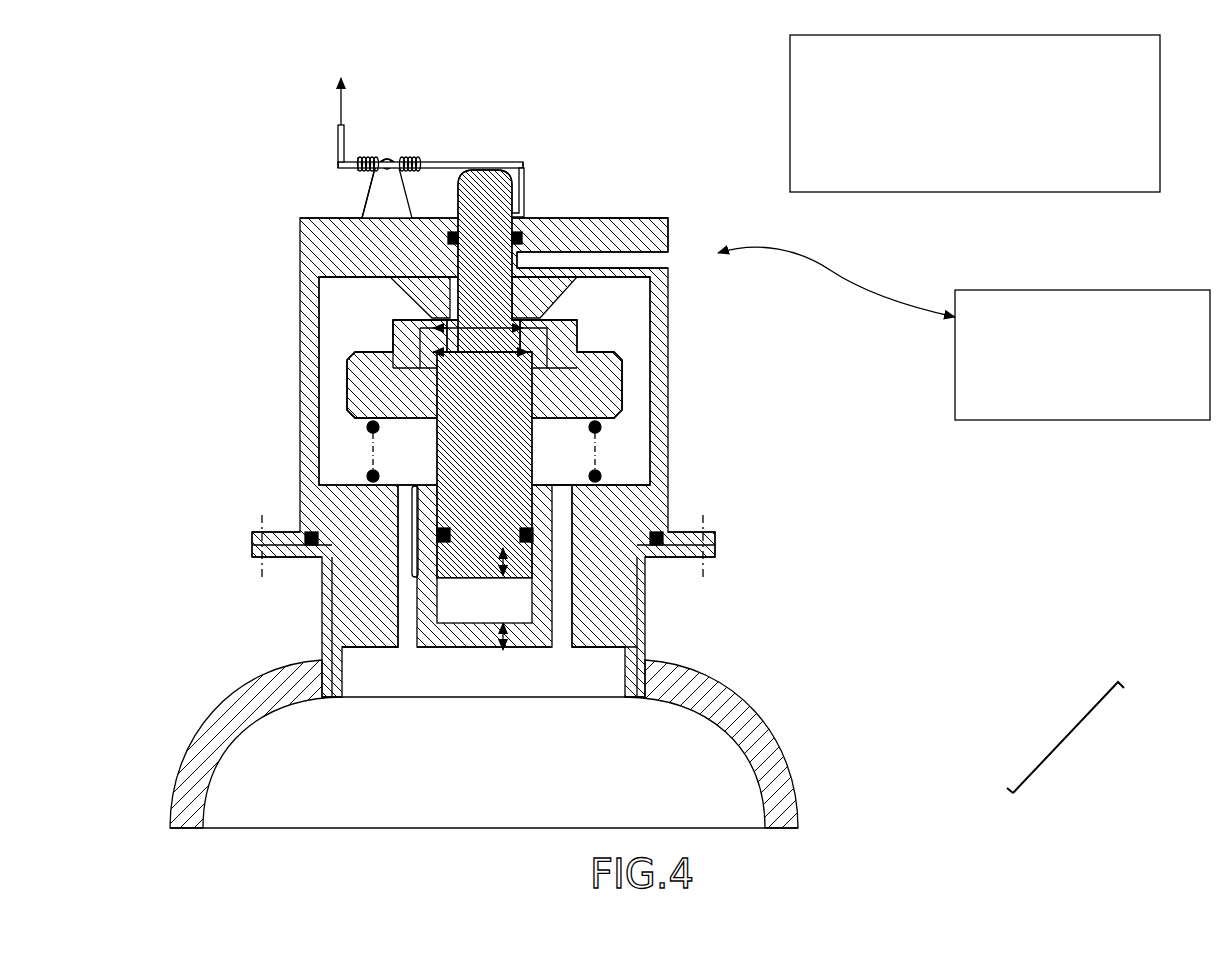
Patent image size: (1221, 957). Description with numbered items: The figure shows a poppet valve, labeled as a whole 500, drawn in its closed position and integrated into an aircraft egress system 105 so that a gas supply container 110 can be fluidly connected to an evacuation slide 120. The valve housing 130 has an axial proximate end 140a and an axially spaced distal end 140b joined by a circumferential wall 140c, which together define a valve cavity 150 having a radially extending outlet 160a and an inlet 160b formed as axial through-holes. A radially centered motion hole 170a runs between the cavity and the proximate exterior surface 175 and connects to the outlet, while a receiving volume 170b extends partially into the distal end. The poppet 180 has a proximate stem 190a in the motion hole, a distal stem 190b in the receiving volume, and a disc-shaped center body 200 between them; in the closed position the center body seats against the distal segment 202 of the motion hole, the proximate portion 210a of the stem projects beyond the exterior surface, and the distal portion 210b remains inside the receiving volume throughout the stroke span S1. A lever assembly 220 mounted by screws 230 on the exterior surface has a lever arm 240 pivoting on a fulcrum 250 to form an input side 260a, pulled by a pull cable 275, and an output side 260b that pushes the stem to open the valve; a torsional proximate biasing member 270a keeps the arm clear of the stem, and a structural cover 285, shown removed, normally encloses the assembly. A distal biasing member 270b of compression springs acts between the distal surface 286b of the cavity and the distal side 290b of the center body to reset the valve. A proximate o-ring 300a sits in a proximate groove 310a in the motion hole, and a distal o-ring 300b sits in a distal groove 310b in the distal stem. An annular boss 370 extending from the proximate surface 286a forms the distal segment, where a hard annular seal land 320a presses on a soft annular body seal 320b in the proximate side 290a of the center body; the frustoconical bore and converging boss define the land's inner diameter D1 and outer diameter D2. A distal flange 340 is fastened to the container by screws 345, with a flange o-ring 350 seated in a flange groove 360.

The gas supply system 500 is at (168, 156).
The egress system 105 is at (1068, 745).
The gas supply container 110 is at (484, 744).
The evacuation slide 120 is at (1082, 355).
The valve housing 130 is at (672, 387).
The axial proximate end 140a is at (484, 247).
The axial distal end 140b is at (489, 566).
The circumferential wall 140c is at (622, 398).
The valve cavity 150 is at (483, 381).
The outlet 160a is at (633, 258).
The inlet 160b is at (548, 650).
The motion hole 170a is at (548, 330).
The receiving volume 170b is at (437, 598).
The axial proximate exterior surface 175 is at (762, 143).
The poppet 180 is at (437, 400).
The proximate stem 190a is at (483, 261).
The distal stem 190b is at (484, 465).
The center body 200 is at (484, 369).
The distal segment 202 is at (436, 316).
The axial proximate portion 210a is at (524, 190).
The axial distal portion 210b is at (412, 543).
The lever assembly 220 is at (405, 154).
The screws 230 is at (360, 216).
The lever arm 240 is at (448, 161).
The fulcrum 250 is at (387, 188).
The input side 260a is at (346, 166).
The output side 260b is at (524, 160).
The axial proximate biasing member 270a is at (362, 158).
The axial distal biasing member 270b is at (604, 445).
The pull cable 275 is at (338, 135).
The structural cover 285 is at (975, 113).
The axial proximate surface 286a is at (630, 277).
The axial distal surface 286b is at (612, 483).
The proximate side 290a is at (395, 340).
The distal side 290b is at (350, 420).
The axial proximate o-ring 300a is at (515, 238).
The axial distal o-ring 300b is at (536, 535).
The axial proximate groove 310a is at (456, 238).
The axial distal groove 310b is at (520, 531).
The annular seal land 320a is at (395, 322).
The annular body seal 320b is at (620, 368).
The axial distal flange 340 is at (715, 540).
The screws 345 is at (252, 550).
The flange o-ring 350 is at (655, 546).
The flange groove 360 is at (312, 546).
The annular boss 370 is at (544, 295).
The inner diameter D1 is at (481, 325).
The outer diameter D2 is at (497, 356).
The stroke span S1 is at (500, 546).